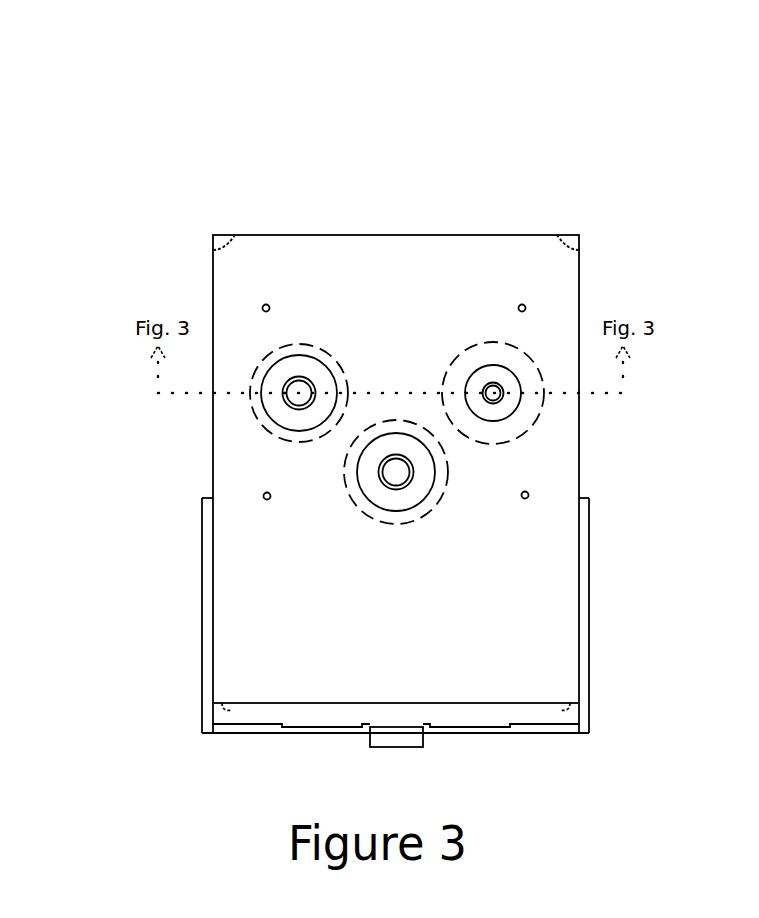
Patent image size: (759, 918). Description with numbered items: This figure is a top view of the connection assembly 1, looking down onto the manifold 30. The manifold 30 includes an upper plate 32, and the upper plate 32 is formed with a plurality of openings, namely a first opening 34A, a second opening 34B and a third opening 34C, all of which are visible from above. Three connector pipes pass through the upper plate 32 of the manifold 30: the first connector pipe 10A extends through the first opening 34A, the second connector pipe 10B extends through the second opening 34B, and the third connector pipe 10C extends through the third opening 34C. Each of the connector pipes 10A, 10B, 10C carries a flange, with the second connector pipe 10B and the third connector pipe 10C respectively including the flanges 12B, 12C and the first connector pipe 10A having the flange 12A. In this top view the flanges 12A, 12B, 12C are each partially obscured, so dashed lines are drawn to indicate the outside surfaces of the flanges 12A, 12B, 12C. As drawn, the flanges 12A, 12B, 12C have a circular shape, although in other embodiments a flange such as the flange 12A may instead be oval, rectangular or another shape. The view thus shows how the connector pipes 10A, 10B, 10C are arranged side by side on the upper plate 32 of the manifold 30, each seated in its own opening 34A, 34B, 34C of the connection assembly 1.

The connection assembly 1 is at (222, 160).
The first connector pipe 10A is at (498, 402).
The second connector pipe 10B is at (283, 401).
The third connector pipe 10C is at (410, 482).
The flange 12A is at (497, 443).
The flange 12B is at (282, 347).
The flange 12C is at (410, 522).
The first opening 34A is at (505, 375).
The second opening 34B is at (303, 428).
The third opening 34C is at (400, 503).
The manifold 30 is at (590, 695).
The upper plate 32 is at (269, 687).